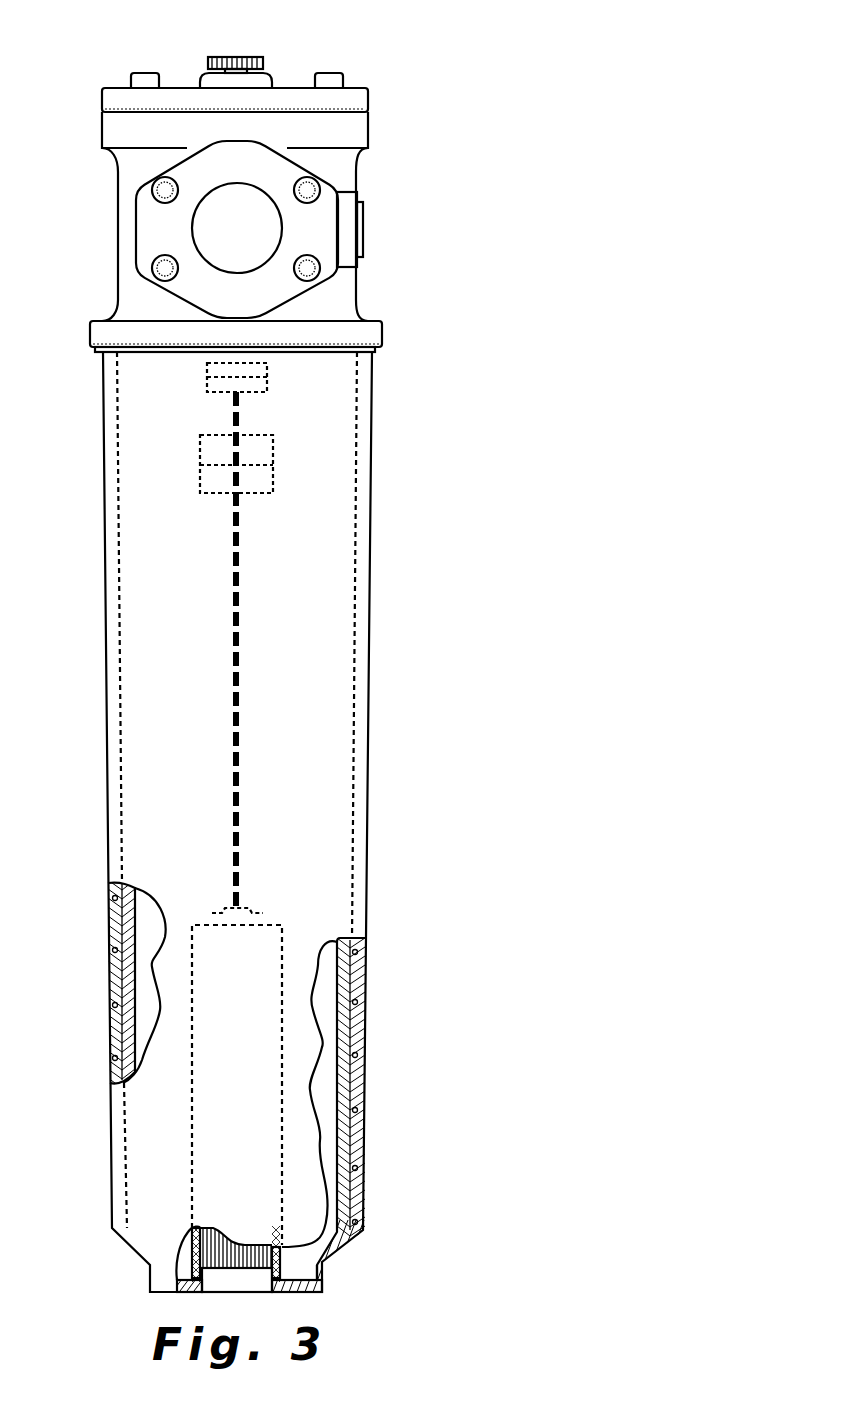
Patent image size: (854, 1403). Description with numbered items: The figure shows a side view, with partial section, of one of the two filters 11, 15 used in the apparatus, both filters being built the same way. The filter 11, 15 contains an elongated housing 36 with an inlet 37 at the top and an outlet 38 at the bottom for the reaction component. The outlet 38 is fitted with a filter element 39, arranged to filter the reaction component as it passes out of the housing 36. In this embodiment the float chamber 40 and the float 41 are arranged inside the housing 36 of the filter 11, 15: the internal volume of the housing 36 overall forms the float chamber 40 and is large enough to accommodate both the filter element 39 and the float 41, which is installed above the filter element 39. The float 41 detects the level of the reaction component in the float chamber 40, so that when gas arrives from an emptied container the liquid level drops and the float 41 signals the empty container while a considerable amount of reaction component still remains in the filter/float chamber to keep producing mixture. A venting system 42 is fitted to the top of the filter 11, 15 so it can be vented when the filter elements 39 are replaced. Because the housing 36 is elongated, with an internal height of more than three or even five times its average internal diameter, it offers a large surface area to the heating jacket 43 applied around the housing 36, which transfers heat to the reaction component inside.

The filter 11 is at (301, 176).
The filter 15 is at (217, 176).
The venting system 42 is at (251, 60).
The inlet 37 is at (213, 230).
The housing 36 is at (353, 555).
The float 41 is at (250, 452).
The float chamber 40 is at (360, 940).
The heating jacket 43 is at (399, 1078).
The filter element 39 is at (282, 1148).
The outlet 38 is at (248, 1272).